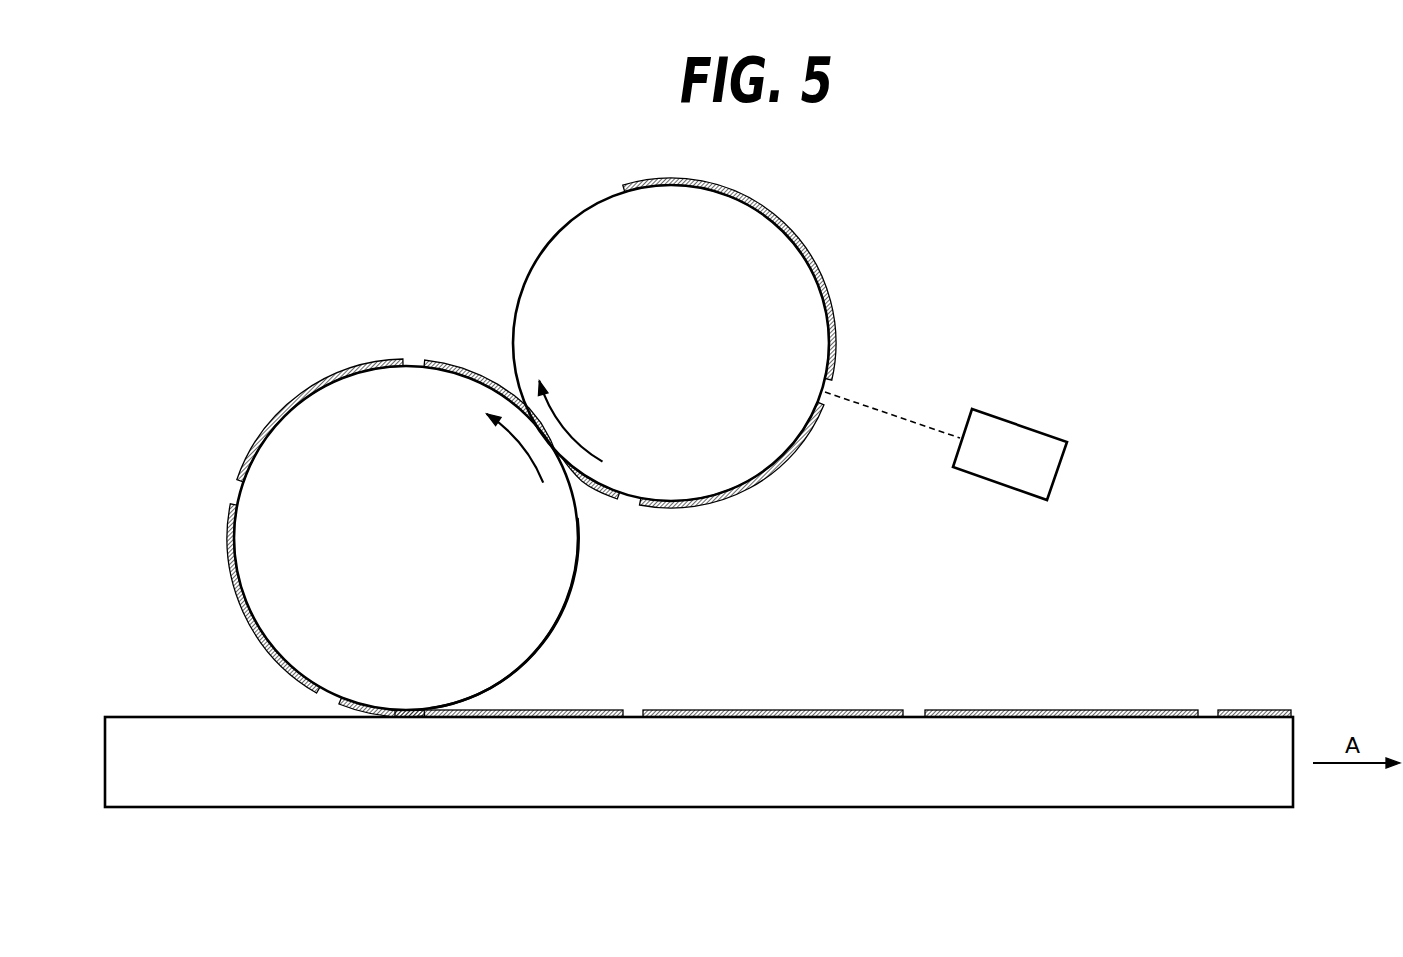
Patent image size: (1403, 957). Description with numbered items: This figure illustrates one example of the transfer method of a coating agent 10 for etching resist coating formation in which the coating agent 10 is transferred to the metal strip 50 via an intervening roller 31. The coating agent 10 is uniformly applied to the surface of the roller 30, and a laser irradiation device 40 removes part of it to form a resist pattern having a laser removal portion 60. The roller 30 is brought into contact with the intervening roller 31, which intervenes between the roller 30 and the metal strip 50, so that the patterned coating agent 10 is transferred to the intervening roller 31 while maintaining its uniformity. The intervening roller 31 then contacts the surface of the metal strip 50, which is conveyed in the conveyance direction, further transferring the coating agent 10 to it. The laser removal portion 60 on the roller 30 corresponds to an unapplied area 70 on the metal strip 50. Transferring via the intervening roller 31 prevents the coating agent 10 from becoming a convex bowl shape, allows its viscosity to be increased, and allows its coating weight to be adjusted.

The coating agent for etching resist coating formation 10 is at (306, 388).
The roller 30 is at (592, 264).
The intervening roller 31 is at (542, 589).
The laser irradiation device 40 is at (1024, 427).
The metal strip 50 is at (698, 767).
The laser removal portion 60 is at (414, 367).
The unapplied area 70 is at (632, 712).